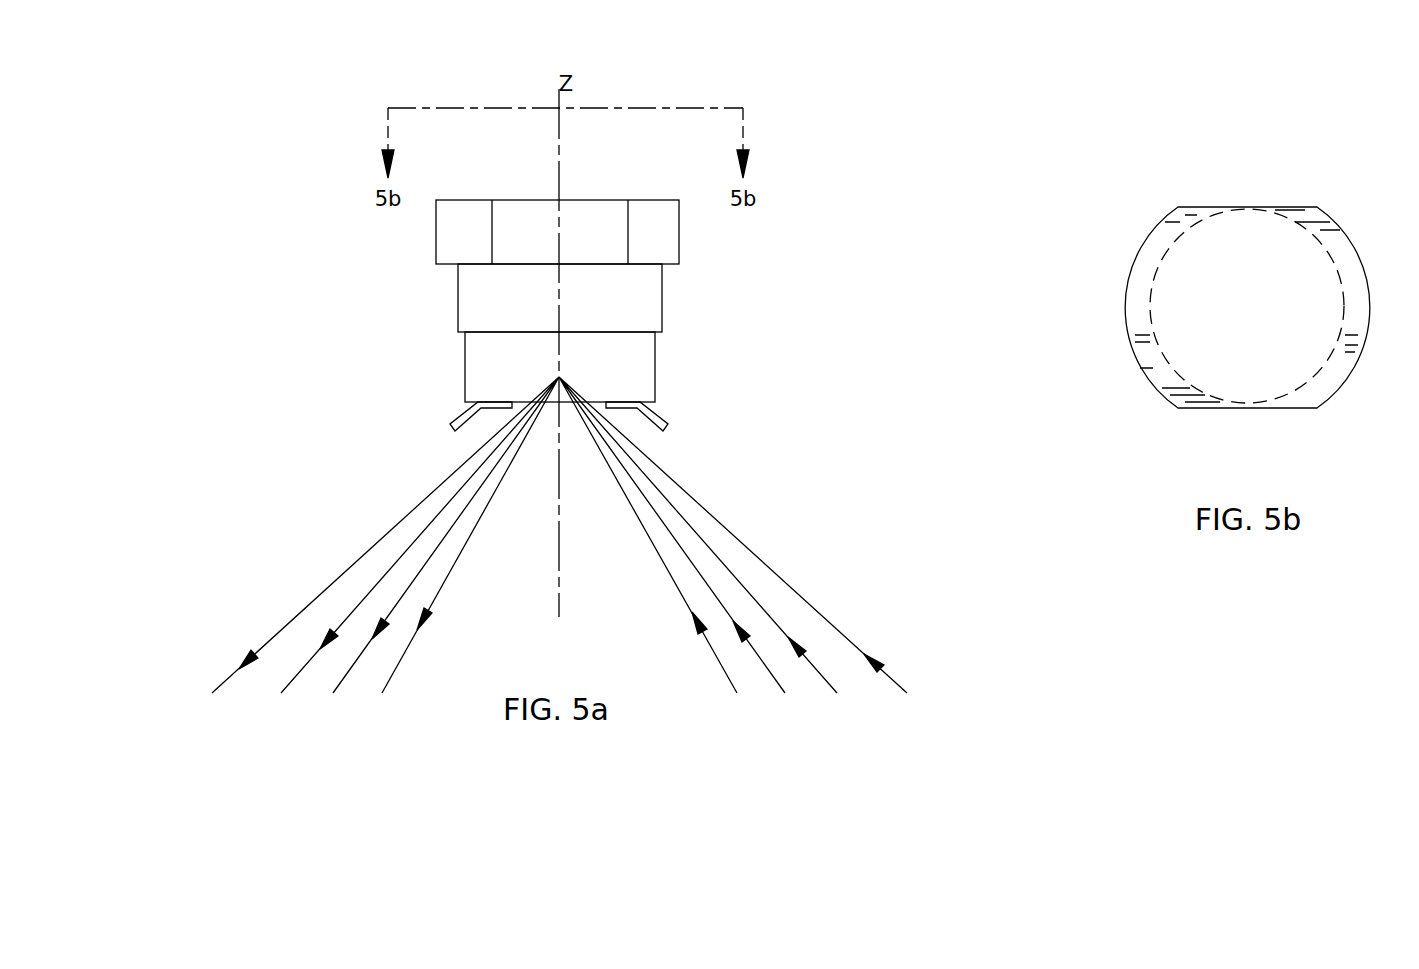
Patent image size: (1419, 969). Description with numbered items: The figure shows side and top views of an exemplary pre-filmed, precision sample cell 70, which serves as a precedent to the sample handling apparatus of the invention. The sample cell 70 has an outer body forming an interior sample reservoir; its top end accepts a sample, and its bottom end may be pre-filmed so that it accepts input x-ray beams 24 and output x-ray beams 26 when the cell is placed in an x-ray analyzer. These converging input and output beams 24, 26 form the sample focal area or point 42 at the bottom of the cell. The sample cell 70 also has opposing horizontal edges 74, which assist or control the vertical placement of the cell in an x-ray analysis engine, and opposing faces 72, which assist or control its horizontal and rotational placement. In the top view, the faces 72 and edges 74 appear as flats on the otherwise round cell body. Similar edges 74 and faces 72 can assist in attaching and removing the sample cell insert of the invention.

In FIG. 5A, the input x-ray beams 24 is at (930, 697).
In FIG. 5A, the output x-ray beams 26 is at (183, 697).
In FIG. 5A, the sample focal area or point 42 is at (550, 432).
In FIG. 5A, the sample cell 70 is at (647, 305).
In FIG. 5B, the sample cell 70 is at (1157, 227).
In FIG. 5A, the opposing faces 72 is at (532, 253).
In FIG. 5B, the opposing faces 72 is at (1268, 410).
In FIG. 5A, the opposing horizontal edges 74 is at (445, 265).
In FIG. 5B, the opposing horizontal edges 74 is at (1153, 368).